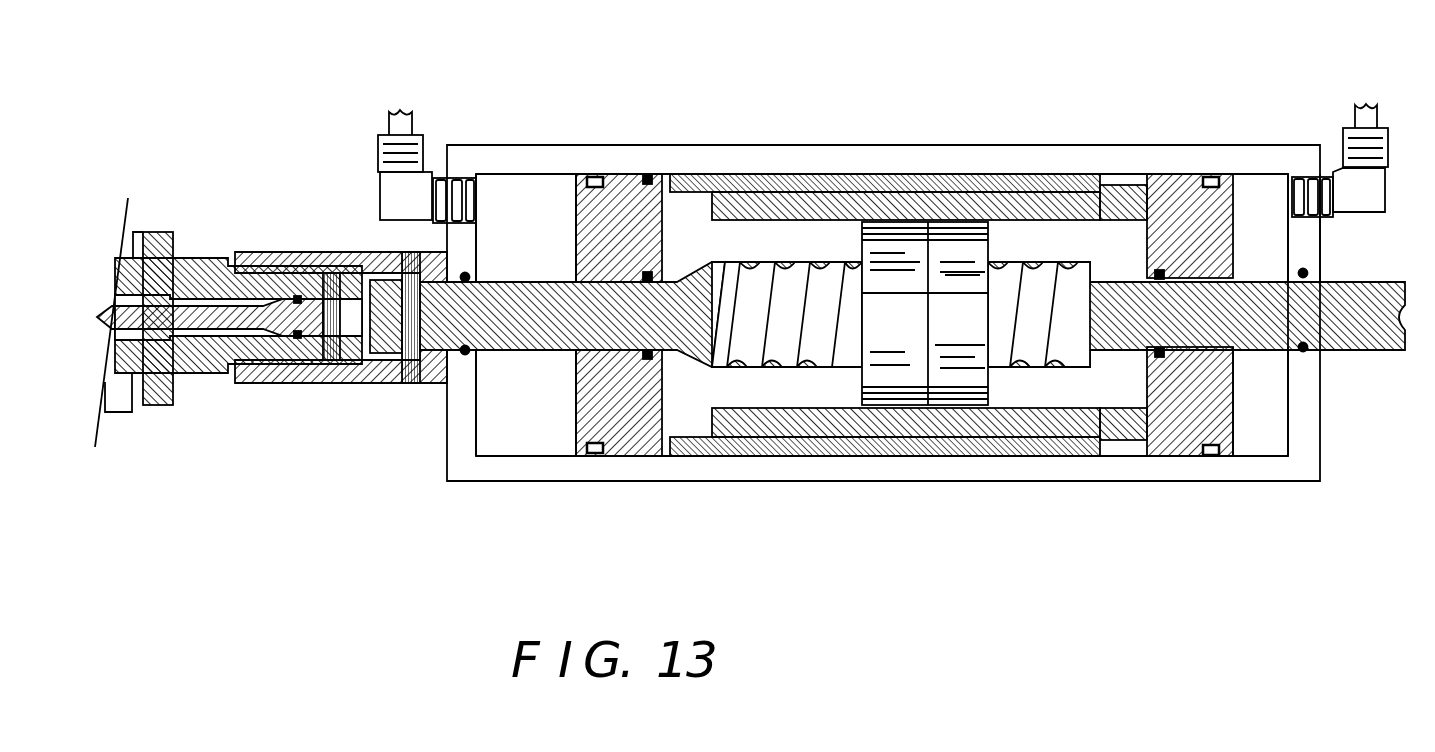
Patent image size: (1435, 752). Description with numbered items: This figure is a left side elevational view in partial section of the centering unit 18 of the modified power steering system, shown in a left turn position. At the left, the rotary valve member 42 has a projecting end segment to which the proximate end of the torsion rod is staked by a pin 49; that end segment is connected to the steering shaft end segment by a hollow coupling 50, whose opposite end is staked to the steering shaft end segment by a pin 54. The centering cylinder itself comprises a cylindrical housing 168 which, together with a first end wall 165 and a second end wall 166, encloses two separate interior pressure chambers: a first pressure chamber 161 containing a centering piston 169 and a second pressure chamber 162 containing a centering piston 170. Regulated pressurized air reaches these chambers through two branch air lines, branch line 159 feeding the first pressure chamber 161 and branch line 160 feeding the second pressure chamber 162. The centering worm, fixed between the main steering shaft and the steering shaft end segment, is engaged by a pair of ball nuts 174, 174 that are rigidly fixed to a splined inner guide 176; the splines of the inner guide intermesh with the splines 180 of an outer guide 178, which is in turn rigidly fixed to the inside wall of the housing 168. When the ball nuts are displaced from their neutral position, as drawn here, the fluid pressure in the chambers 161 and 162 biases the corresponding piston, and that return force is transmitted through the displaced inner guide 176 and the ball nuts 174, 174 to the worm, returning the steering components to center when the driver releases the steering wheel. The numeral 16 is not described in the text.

The piston rod assembly 16 is at (246, 214).
The centering unit 18 is at (856, 126).
The rotary valve member 42 is at (210, 373).
The pin 49 is at (337, 367).
The hollow coupling 50 is at (325, 377).
The pin 54 is at (408, 252).
The branch air line 159 is at (1353, 115).
The branch air line 160 is at (413, 122).
The first pressure chamber 161 is at (1253, 440).
The second pressure chamber 162 is at (526, 228).
The first end wall 165 is at (1320, 368).
The second end wall 166 is at (478, 385).
The cylindrical housing 168 is at (1030, 481).
The centering piston 169 is at (1185, 172).
The centering piston 170 is at (623, 173).
The ball nut 174 is at (865, 238).
The splined inner guide 176 is at (1103, 180).
The outer guide 178 is at (940, 172).
The splines 180 is at (685, 200).